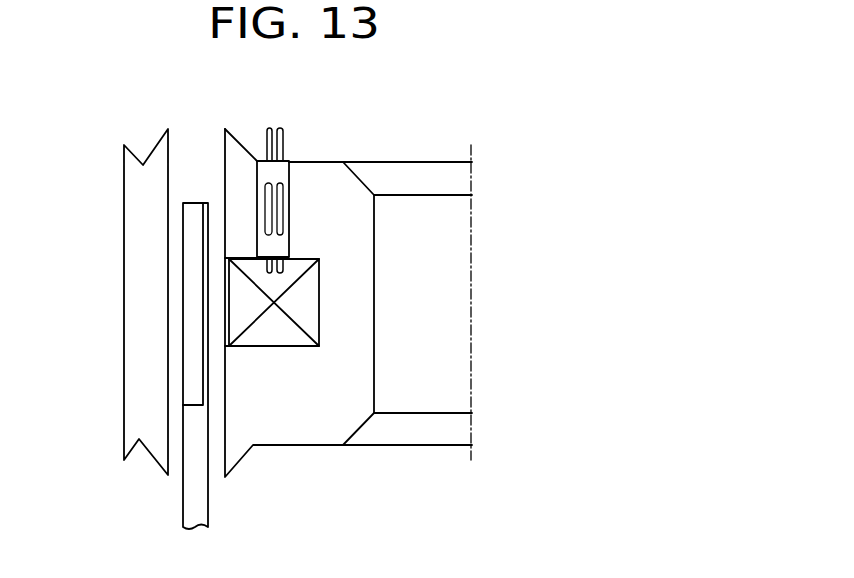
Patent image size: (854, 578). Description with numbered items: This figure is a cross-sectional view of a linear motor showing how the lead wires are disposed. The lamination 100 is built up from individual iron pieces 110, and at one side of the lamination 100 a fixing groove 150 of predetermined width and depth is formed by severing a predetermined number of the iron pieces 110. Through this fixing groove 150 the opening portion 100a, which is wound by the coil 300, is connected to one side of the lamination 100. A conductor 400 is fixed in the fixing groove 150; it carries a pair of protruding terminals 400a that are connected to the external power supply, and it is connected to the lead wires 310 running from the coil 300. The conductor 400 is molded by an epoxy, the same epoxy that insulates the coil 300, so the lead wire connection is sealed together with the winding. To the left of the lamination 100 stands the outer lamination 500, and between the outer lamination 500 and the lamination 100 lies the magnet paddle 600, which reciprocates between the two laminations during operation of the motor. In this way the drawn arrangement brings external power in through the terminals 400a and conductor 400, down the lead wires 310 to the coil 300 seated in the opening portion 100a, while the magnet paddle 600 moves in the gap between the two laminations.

The lamination 100 is at (403, 160).
The opening portion 100a is at (224, 343).
The iron piece 110 is at (367, 361).
The fixing groove 150 is at (237, 150).
The coil 300 is at (262, 339).
The lead wires 310 is at (282, 266).
The conductor 400 is at (318, 165).
The protruding terminals 400a is at (268, 130).
The outer lamination 500 is at (147, 143).
The magnet paddle 600 is at (197, 203).